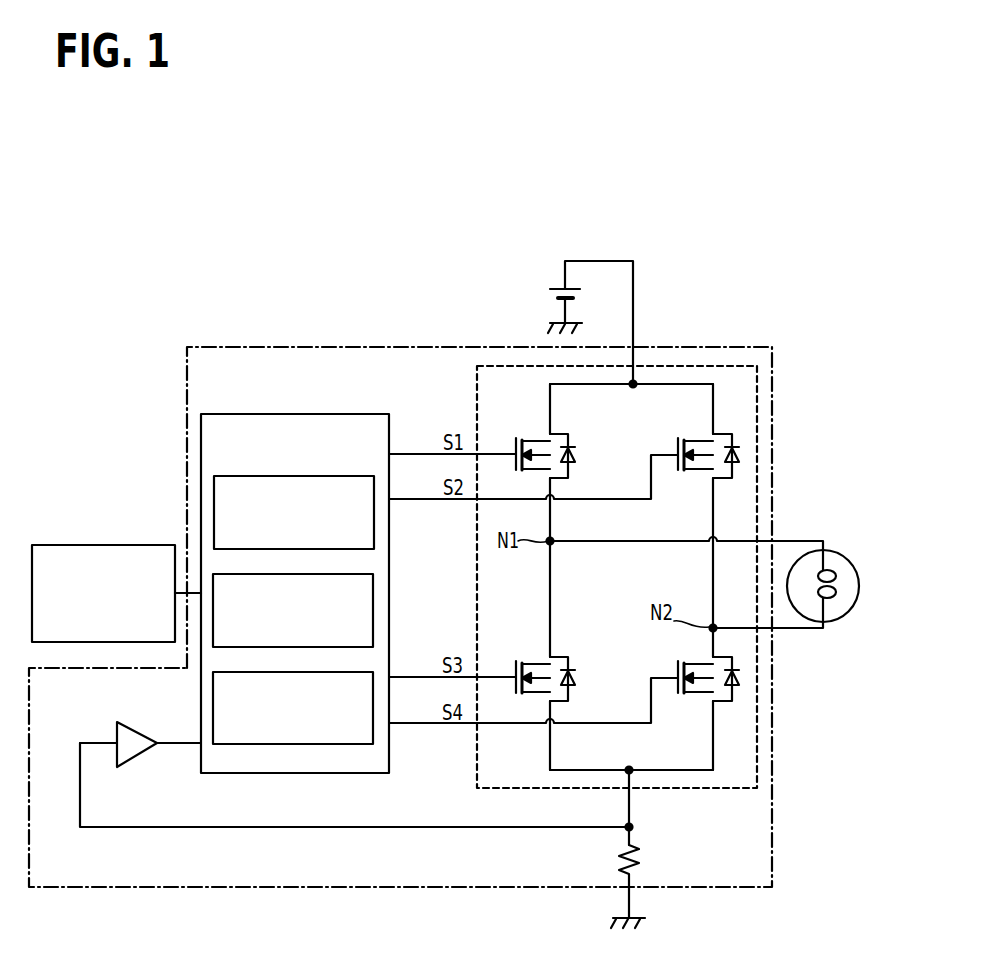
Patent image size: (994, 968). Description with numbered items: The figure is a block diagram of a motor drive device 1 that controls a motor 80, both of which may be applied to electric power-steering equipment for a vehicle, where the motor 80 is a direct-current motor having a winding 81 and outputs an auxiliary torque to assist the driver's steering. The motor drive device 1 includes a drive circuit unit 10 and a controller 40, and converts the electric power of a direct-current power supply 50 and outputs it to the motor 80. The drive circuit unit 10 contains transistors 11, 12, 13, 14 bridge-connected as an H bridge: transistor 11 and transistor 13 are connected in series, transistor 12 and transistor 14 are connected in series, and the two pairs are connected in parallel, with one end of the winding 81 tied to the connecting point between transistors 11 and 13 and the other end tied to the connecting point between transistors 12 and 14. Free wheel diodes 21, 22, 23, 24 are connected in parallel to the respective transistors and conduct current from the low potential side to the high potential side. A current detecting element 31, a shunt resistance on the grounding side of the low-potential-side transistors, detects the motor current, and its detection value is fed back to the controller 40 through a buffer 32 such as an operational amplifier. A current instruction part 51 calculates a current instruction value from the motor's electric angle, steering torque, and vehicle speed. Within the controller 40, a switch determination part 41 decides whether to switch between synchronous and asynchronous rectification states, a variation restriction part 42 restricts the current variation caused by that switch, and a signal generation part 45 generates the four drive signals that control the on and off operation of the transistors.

The motor drive device 1 is at (187, 360).
The drive circuit unit 10 is at (477, 393).
The transistor 11 is at (513, 450).
The transistor 12 is at (677, 450).
The transistor 13 is at (513, 673).
The transistor 14 is at (677, 673).
The free wheel diode 21 is at (577, 457).
The free wheel diode 22 is at (733, 493).
The free wheel diode 23 is at (573, 677).
The free wheel diode 24 is at (735, 703).
The current detecting element 31 is at (640, 855).
The buffer 32 is at (115, 733).
The controller 40 is at (307, 413).
The switch determination part 41 is at (375, 528).
The variation restriction part 42 is at (373, 603).
The signal generation part 45 is at (373, 697).
The direct-current power supply 50 is at (557, 287).
The current instruction part 51 is at (105, 545).
The motor 80 is at (837, 552).
The winding 81 is at (837, 592).